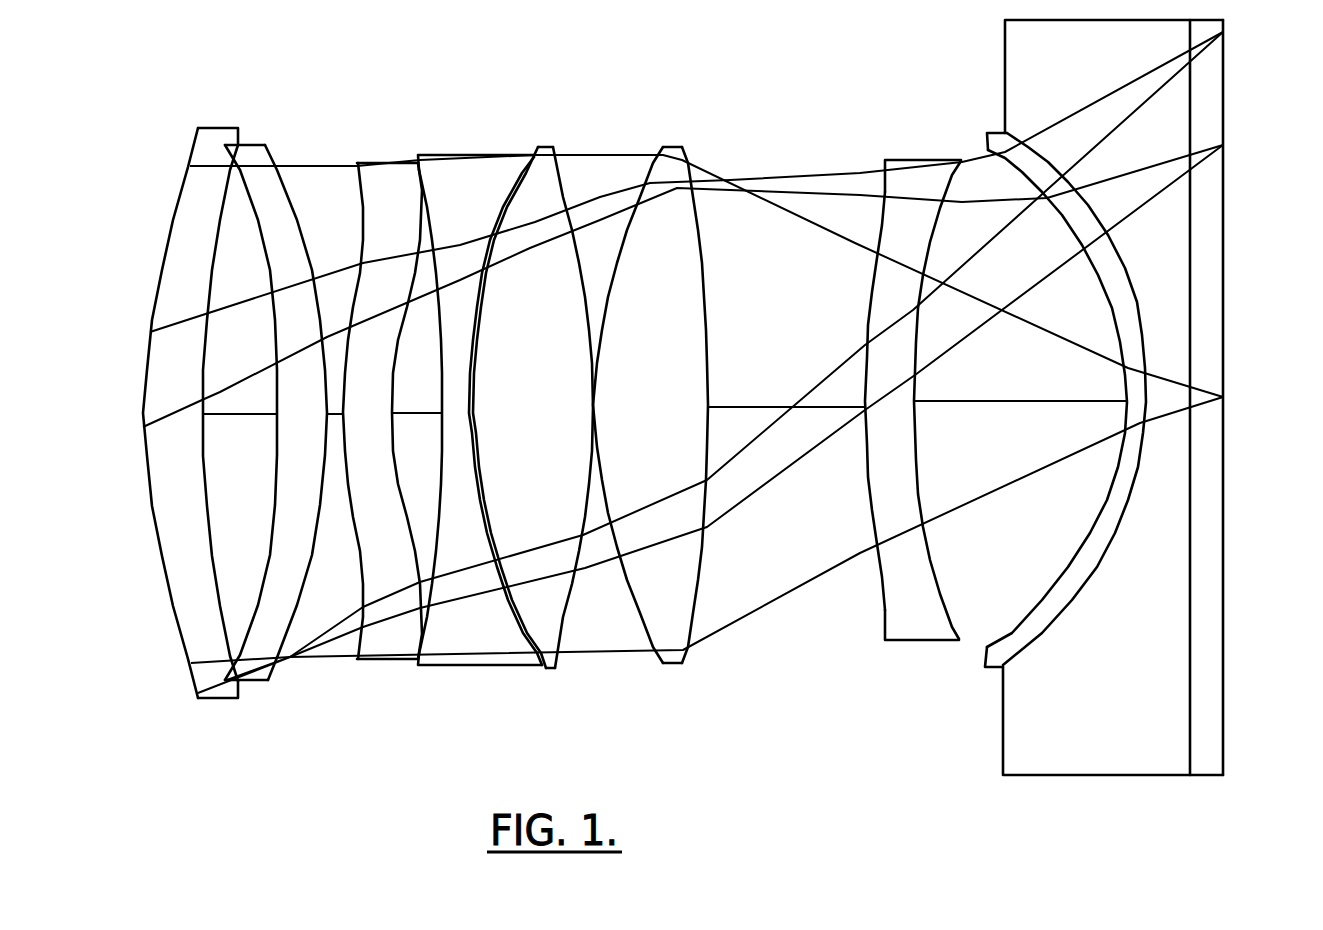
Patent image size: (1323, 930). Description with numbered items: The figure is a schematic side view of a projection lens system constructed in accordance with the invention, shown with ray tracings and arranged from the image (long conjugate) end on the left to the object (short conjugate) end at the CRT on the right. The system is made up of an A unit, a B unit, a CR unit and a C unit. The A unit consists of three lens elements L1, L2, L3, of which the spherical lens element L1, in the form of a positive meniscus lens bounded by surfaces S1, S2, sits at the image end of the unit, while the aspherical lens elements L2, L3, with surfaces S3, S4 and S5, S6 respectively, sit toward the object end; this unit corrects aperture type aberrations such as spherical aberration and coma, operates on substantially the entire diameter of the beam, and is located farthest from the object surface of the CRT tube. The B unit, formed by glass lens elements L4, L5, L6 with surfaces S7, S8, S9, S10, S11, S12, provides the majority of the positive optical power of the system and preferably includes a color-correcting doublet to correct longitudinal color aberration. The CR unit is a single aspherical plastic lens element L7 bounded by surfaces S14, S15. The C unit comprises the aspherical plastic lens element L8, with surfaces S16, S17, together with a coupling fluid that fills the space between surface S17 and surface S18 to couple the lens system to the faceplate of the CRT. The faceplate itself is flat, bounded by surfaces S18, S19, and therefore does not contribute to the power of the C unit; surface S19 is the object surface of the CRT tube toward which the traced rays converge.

The spherical lens element L1 is at (160, 386).
The aspherical lens element L2 is at (273, 404).
The aspherical lens element L3 is at (380, 403).
The lens element L4 is at (469, 403).
The lens element L5 is at (547, 413).
The lens element L6 is at (688, 402).
The aspherical lens element L7 is at (916, 364).
The aspherical plastic lens element L8 is at (1042, 371).
The surface S1 is at (147, 512).
The surface S2 is at (208, 468).
The surface S3 is at (272, 513).
The surface S4 is at (290, 653).
The surface S5 is at (357, 643).
The surface S6 is at (400, 470).
The surface S7 is at (433, 348).
The surface S8 is at (510, 620).
The surface S9 is at (523, 637).
The surface S10 is at (570, 627).
The surface S11 is at (648, 628).
The surface S12 is at (705, 620).
The surface S14 is at (882, 605).
The surface S15 is at (943, 587).
The surface S16 is at (1073, 570).
The surface S17 is at (1073, 600).
The surface S18 is at (1188, 687).
The surface S19 is at (1227, 640).